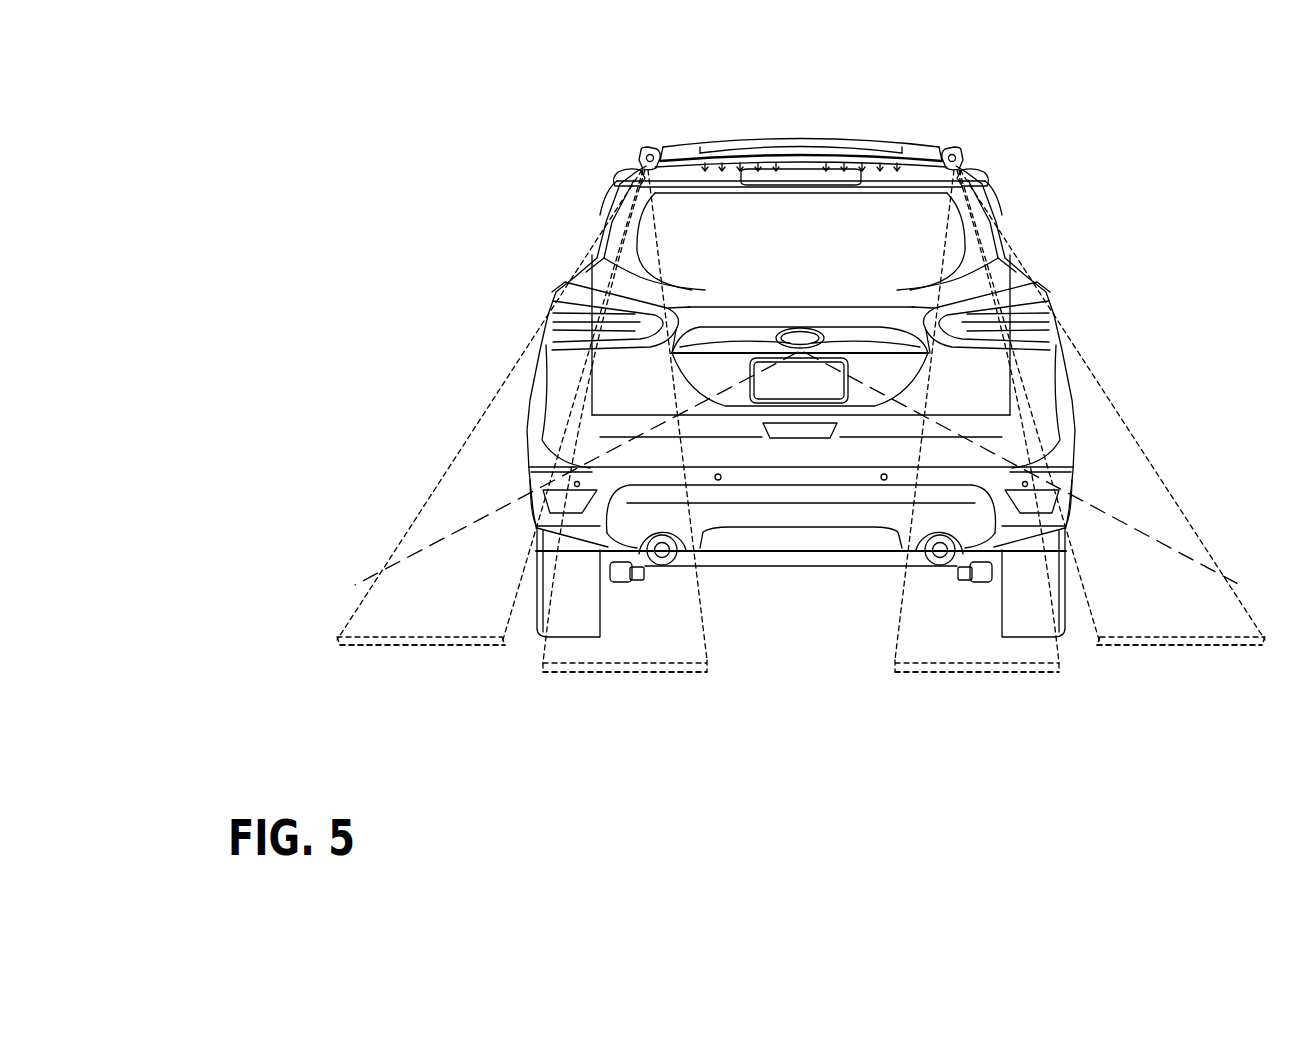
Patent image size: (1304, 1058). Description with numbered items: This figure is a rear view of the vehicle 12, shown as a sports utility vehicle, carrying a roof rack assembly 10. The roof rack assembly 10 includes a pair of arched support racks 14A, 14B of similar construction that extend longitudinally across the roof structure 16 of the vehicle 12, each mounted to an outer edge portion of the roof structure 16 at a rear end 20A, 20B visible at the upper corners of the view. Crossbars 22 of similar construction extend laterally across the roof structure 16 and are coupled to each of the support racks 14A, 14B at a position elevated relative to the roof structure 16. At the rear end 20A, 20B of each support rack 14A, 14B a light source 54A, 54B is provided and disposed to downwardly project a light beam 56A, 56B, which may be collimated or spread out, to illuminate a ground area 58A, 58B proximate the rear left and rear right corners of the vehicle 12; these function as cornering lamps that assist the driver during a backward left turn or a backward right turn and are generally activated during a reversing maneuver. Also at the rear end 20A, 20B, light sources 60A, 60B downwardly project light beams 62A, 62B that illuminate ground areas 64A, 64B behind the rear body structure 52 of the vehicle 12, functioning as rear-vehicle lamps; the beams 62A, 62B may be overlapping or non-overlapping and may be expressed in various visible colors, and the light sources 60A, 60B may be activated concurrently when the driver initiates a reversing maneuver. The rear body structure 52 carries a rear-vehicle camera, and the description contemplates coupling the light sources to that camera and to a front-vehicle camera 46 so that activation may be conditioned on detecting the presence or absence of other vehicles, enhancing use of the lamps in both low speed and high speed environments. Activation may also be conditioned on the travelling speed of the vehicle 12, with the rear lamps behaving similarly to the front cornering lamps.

The roof rack assembly 10 is at (436, 233).
The vehicle 12 is at (520, 421).
The support rack 14A is at (648, 152).
The support rack 14B is at (951, 152).
The roof structure 16 is at (836, 145).
The rear end 20A is at (640, 155).
The rear end 20B is at (953, 155).
The crossbar 22 is at (878, 140).
The front-vehicle camera 46 is at (797, 350).
The rear body structure 52 is at (905, 395).
The light source 54A is at (635, 160).
The light source 54B is at (962, 160).
The light beam 56A is at (360, 647).
The light beam 56B is at (1250, 647).
The ground area 58A is at (440, 645).
The ground area 58B is at (1167, 650).
The light source 60A is at (640, 185).
The light source 60B is at (962, 185).
The light beam 62A is at (590, 672).
The light beam 62B is at (1000, 672).
The ground area 64A is at (675, 672).
The ground area 64B is at (923, 672).